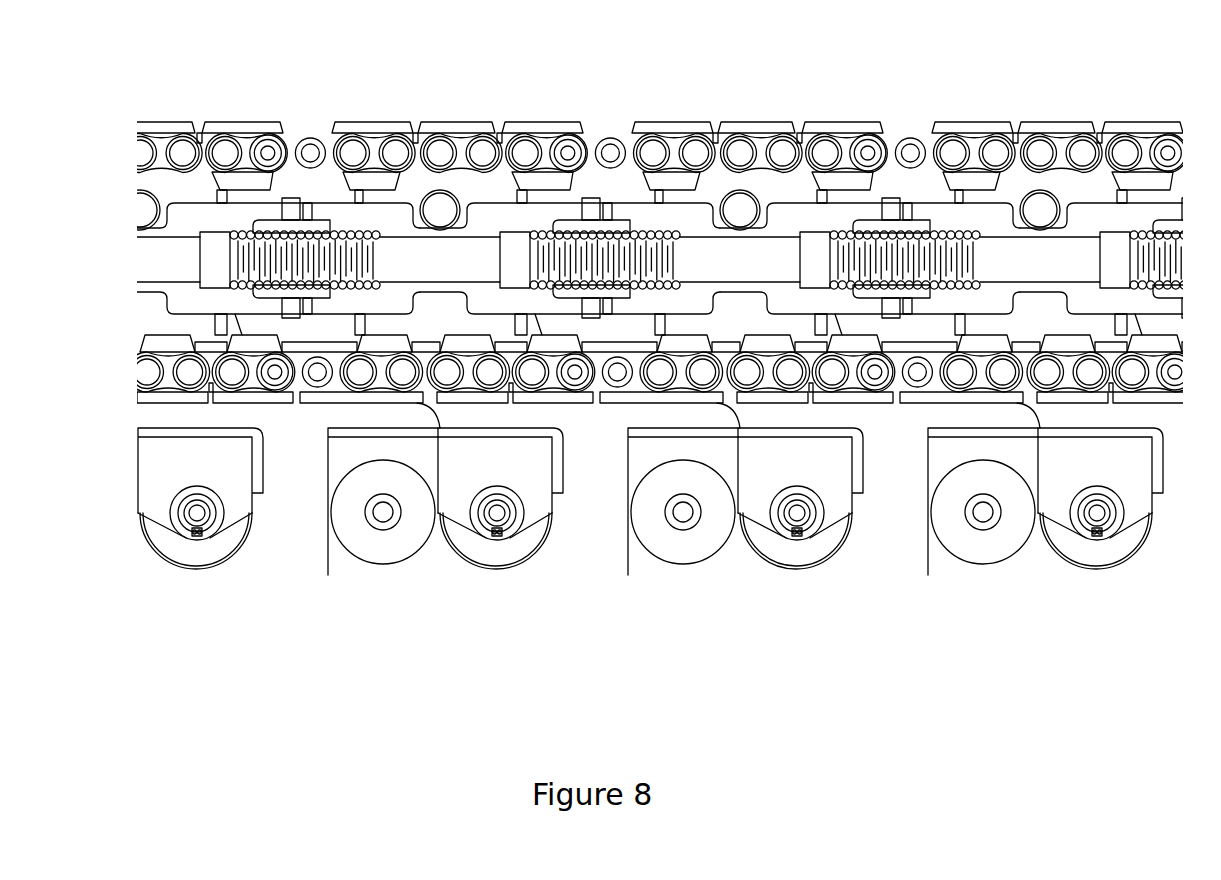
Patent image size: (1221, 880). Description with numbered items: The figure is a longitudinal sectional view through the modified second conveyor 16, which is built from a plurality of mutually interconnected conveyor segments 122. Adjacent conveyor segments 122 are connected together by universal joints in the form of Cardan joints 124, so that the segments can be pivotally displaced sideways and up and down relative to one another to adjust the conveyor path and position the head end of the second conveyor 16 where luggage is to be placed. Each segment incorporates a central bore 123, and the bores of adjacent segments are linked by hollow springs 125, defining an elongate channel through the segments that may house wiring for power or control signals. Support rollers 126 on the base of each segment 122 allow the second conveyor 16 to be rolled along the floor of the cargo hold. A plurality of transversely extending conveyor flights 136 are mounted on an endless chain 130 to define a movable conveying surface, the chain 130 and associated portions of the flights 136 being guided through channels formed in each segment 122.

The second conveyor 16 is at (1026, 77).
The conveyor segment 122 is at (826, 420).
The central bore 123 is at (400, 257).
The Cardan joint 124 is at (596, 300).
The hollow spring 125 is at (316, 285).
The support roller 126 is at (792, 566).
The endless chain 130 is at (867, 158).
The conveyor flight 136 is at (751, 125).